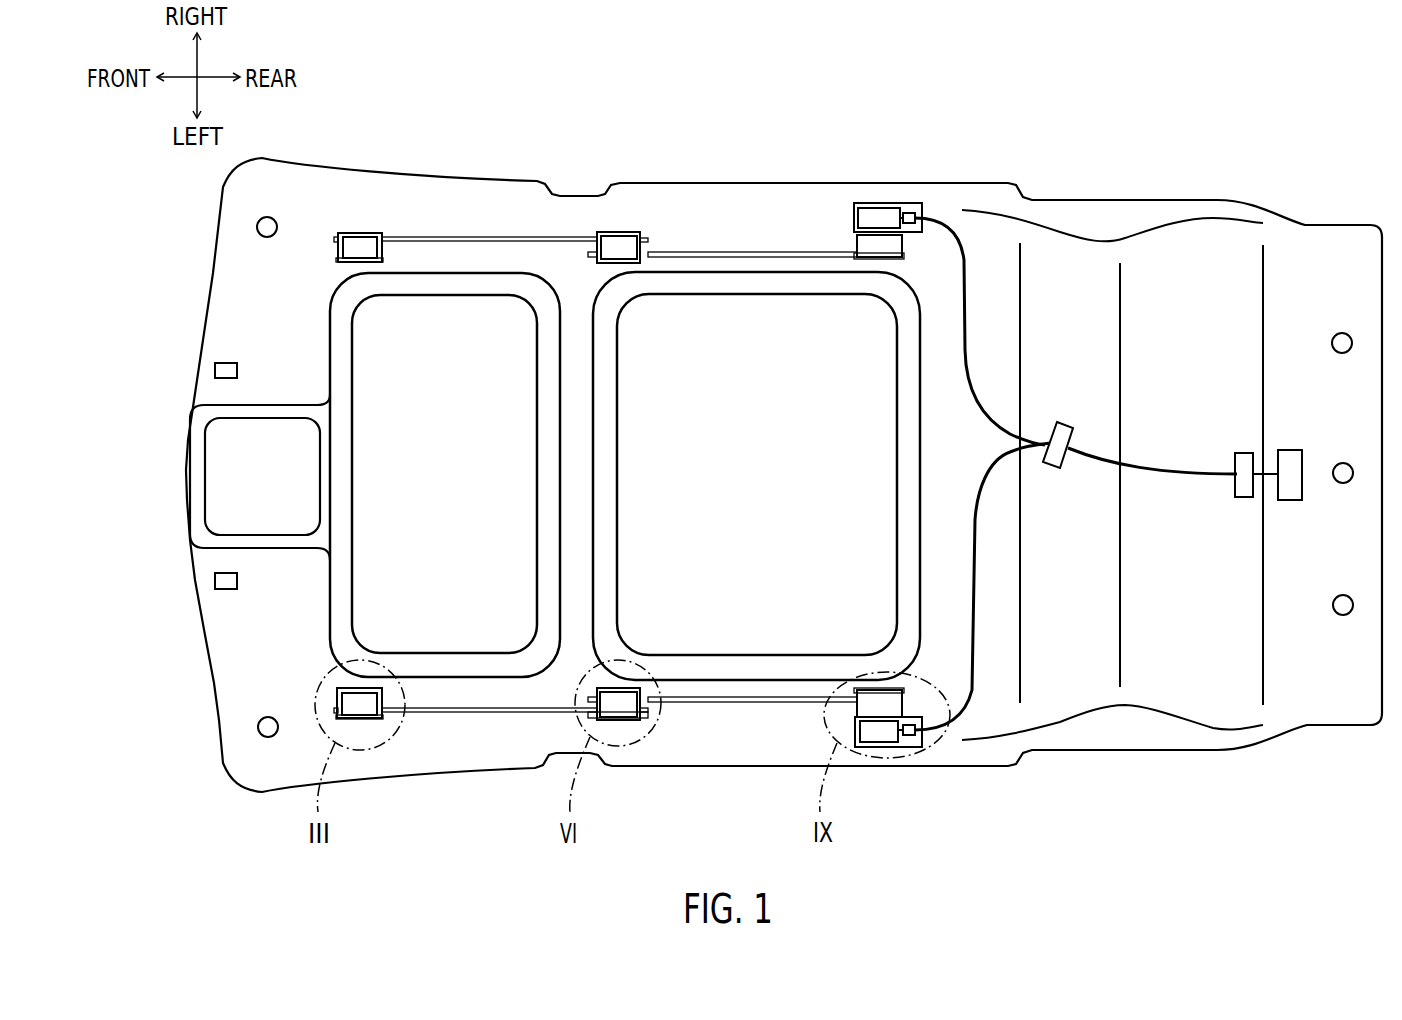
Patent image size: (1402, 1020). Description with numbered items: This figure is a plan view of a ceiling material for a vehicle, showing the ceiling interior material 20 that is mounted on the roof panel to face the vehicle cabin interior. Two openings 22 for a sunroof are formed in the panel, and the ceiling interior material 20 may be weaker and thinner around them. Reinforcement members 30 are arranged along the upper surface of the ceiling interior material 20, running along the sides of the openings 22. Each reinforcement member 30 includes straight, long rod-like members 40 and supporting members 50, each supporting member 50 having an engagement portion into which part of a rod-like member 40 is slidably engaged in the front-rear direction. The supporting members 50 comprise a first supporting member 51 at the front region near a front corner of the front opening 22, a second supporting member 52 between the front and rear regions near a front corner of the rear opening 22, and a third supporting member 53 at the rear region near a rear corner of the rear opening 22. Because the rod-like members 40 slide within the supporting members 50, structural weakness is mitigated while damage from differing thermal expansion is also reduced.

The ceiling interior material 20 is at (1136, 192).
The opening 22 is at (445, 297).
The reinforcement member 30 is at (882, 200).
The rod-like member 40 is at (487, 238).
The supporting member 50 is at (664, 475).
The first supporting member 51 is at (360, 247).
The second supporting member 52 is at (620, 247).
The third supporting member 53 is at (908, 207).